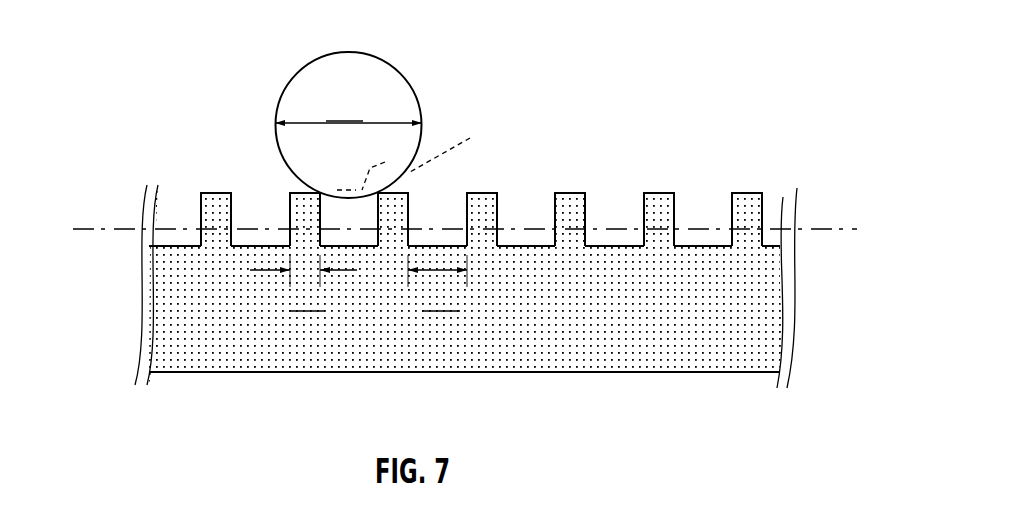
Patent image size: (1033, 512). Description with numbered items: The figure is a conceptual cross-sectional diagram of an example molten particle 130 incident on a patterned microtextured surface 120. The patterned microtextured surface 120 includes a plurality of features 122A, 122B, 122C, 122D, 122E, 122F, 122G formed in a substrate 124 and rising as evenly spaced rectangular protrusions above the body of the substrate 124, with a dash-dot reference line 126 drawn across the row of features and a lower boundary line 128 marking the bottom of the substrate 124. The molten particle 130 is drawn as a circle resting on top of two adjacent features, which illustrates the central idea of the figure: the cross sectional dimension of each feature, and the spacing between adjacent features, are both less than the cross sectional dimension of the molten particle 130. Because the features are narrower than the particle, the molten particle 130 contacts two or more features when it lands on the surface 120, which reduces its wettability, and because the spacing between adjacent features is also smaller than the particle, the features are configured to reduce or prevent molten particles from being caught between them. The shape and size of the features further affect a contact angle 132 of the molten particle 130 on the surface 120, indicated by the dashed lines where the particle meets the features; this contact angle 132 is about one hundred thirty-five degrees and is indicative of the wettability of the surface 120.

The patterned microtextured surface 120 is at (848, 97).
The feature 122A is at (215, 193).
The feature 122B is at (287, 190).
The feature 122C is at (408, 217).
The feature 122D is at (497, 217).
The feature 122E is at (585, 217).
The feature 122F is at (674, 217).
The protrusion 122G is at (762, 217).
The substrate 124 is at (232, 357).
The reference plane 126 is at (120, 226).
The bottom surface 128 is at (688, 370).
The molten particle 130 is at (346, 52).
The contact angle 132 is at (385, 162).